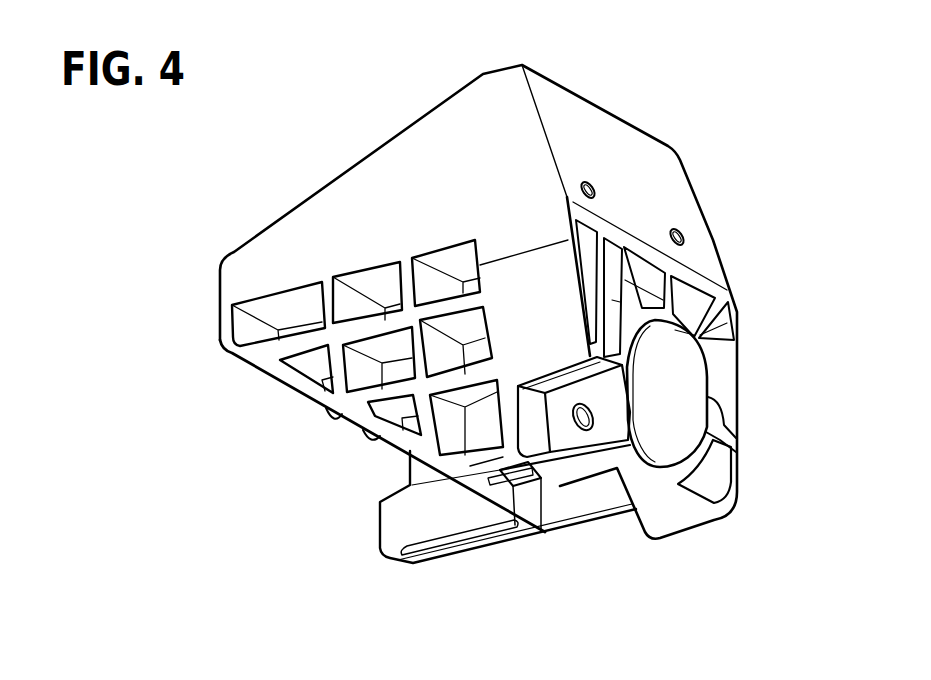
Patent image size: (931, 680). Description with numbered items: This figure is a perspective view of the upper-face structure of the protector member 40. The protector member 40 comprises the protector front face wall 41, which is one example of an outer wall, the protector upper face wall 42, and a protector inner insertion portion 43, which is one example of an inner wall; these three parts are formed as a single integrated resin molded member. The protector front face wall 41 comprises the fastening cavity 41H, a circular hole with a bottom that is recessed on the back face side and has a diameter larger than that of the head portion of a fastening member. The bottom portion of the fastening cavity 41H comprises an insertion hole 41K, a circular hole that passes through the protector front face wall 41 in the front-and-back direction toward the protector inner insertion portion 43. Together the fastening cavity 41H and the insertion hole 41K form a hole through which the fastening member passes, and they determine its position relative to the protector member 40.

The protector member 40 is at (714, 82).
The protector front face wall 41 is at (634, 138).
The fastening cavity 41H is at (688, 392).
The insertion hole 41K is at (586, 431).
The protector upper face wall 42 is at (343, 187).
The protector inner insertion portion 43 is at (391, 558).